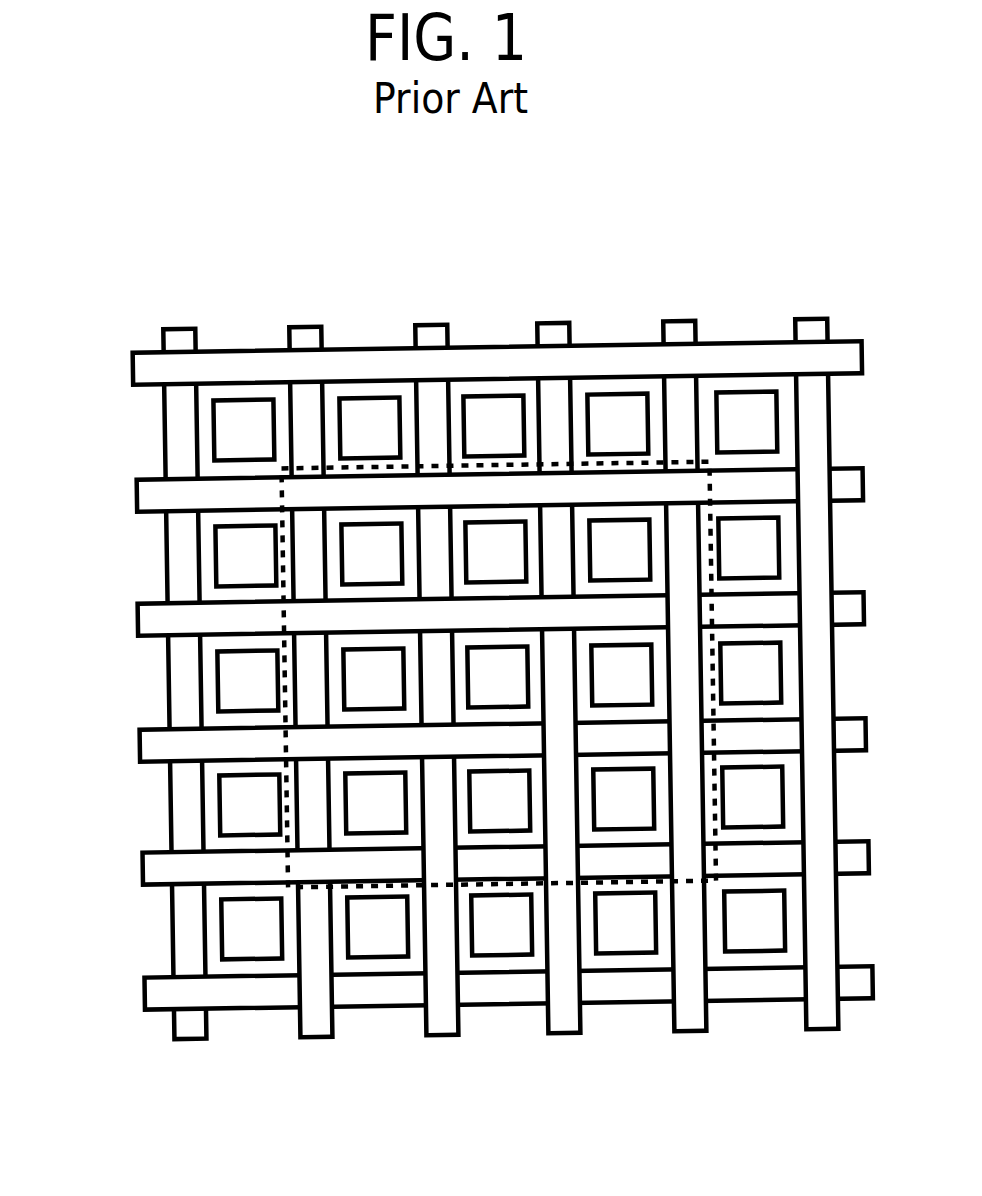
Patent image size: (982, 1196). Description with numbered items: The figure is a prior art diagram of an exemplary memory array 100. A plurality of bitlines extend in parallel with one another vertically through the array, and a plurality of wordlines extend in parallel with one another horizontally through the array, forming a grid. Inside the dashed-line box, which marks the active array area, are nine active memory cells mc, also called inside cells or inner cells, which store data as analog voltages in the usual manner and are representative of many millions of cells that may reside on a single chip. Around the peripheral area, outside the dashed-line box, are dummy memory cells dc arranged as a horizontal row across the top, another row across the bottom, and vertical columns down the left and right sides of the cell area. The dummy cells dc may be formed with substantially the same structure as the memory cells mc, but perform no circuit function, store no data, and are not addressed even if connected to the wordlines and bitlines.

The memory array 100 is at (254, 268).
The dummy memory cell dc is at (499, 676).
The memory cell mc is at (498, 675).